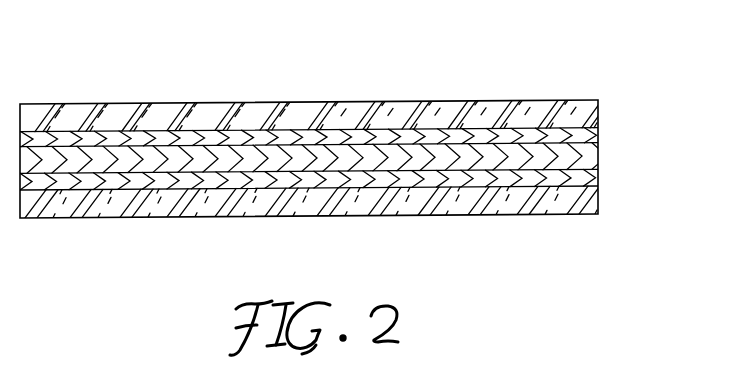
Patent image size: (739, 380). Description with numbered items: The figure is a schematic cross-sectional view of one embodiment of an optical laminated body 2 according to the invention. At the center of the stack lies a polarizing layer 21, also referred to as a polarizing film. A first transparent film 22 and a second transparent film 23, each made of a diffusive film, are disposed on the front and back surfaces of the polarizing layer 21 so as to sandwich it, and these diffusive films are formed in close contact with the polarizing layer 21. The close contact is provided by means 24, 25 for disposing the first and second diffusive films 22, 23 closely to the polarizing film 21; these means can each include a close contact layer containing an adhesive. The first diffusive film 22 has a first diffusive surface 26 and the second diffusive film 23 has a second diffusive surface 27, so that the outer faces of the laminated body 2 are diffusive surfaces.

The optical laminated body 2 is at (356, 157).
The polarizing layer 21 is at (598, 160).
The first transparent film 22 is at (316, 242).
The second transparent film 23 is at (453, 108).
The means for disposing the first diffusive film 24 is at (598, 176).
The means for disposing the second diffusive film 25 is at (597, 135).
The first diffusive surface 26 is at (83, 217).
The second diffusive surface 27 is at (320, 73).